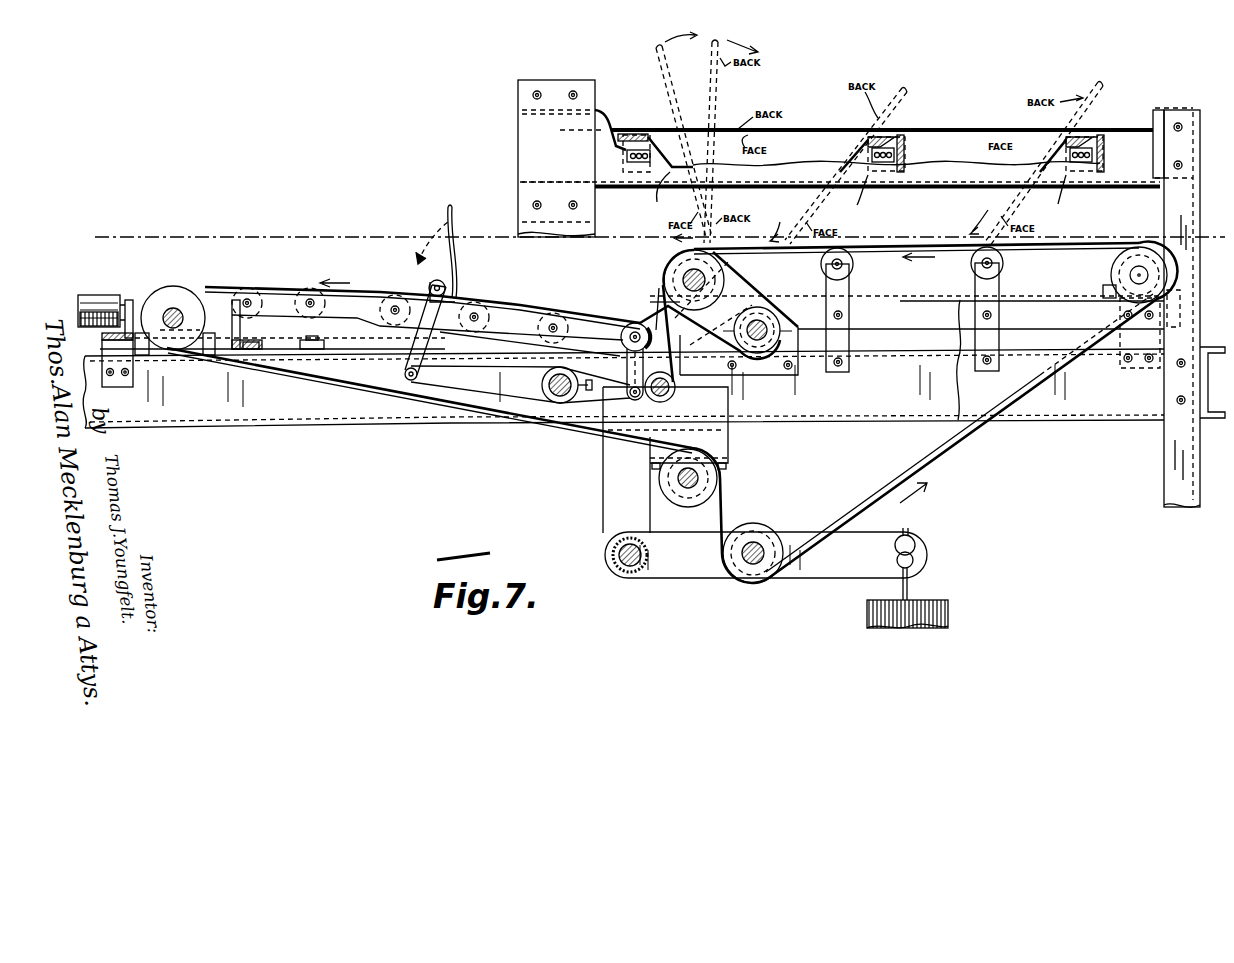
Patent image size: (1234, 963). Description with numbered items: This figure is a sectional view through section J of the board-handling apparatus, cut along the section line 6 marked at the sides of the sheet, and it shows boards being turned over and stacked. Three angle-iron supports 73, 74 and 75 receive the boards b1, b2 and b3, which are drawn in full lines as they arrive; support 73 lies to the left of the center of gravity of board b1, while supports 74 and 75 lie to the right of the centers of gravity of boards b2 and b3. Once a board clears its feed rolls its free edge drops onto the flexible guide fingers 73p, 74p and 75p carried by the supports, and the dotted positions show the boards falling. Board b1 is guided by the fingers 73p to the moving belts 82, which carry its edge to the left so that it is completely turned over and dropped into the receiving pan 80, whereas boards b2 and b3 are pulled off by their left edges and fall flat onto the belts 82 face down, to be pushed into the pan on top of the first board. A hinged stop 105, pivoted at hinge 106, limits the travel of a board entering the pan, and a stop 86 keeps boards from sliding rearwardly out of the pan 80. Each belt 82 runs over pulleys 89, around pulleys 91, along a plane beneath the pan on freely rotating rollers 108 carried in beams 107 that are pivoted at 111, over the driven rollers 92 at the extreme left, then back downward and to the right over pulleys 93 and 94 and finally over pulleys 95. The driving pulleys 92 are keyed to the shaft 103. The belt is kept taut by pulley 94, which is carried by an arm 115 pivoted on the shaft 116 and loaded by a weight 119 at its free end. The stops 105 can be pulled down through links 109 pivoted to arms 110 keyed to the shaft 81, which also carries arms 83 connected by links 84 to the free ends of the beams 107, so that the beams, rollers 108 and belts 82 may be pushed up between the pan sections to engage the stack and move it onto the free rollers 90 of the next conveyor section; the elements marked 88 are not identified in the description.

The section line 6- 6 is at (108, 251).
The angle-iron support 73 is at (622, 157).
The flexible guide finger 73p is at (650, 195).
The angle-iron support 74 is at (906, 152).
The flexible guide finger 74p is at (853, 196).
The angle-iron support 75 is at (1130, 150).
The flexible guide finger 75p is at (1066, 194).
The board b1 is at (722, 130).
The board b2 is at (912, 130).
The board b3 is at (1120, 128).
The receiving pan 80 is at (545, 316).
The shaft 81 is at (556, 404).
The belts 82 is at (297, 290).
The arms 83 is at (597, 397).
The links 84 is at (627, 358).
The stop 86 is at (658, 300).
The roller 88 is at (850, 268).
The pulleys 89 is at (724, 263).
The free rollers 90 is at (100, 300).
The pulleys 91 is at (736, 317).
The driven rollers 92 is at (186, 298).
The pulley 93 is at (690, 498).
The pulley 94 is at (762, 580).
The pulleys 95 is at (1140, 258).
The shaft 103 is at (172, 306).
The stop 105 is at (438, 243).
The hinge 106 is at (452, 297).
The beams 107 is at (427, 335).
The supporting rollers 108 is at (360, 315).
The links 109 is at (418, 333).
The arms 110 is at (478, 378).
The pivot 111 is at (247, 302).
The arm 115 is at (826, 572).
The shaft 116 is at (628, 562).
The weight 119 is at (948, 612).
The section J is at (778, 468).